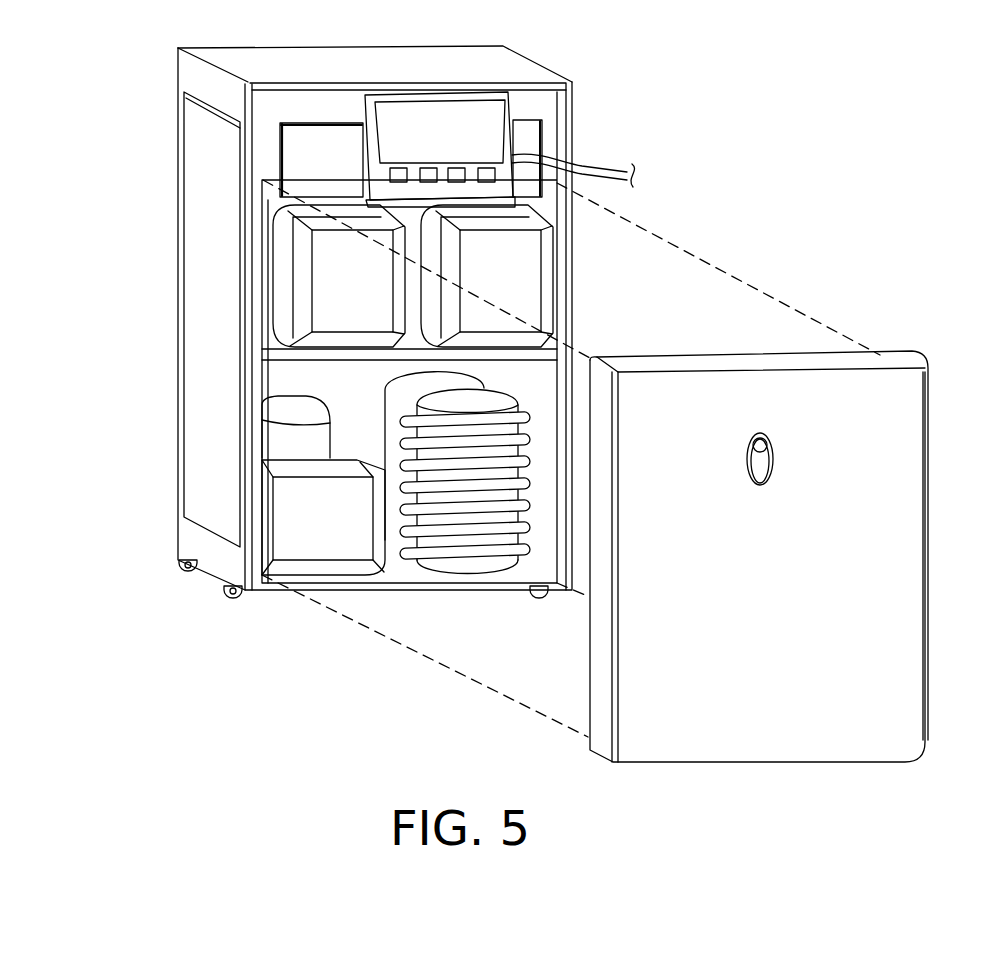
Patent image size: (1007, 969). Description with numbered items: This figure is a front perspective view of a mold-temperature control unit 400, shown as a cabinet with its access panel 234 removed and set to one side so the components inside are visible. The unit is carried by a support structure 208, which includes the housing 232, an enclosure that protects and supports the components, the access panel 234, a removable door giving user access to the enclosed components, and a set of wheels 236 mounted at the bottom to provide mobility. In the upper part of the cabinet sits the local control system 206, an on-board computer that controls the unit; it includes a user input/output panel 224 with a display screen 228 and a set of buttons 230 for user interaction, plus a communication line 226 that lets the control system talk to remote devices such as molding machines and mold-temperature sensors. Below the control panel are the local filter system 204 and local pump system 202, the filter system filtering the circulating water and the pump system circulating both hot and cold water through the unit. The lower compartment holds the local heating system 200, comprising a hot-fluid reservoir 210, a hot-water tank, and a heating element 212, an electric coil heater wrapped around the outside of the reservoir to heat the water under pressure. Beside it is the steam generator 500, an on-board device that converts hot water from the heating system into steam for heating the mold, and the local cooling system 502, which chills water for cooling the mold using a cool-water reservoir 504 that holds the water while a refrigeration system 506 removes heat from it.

The local heating system 200 is at (523, 404).
The local pump system 202 is at (527, 289).
The local filter system 204 is at (374, 289).
The local control system 206 is at (357, 146).
The support structure 208 is at (607, 786).
The hot-fluid reservoir 210 is at (477, 565).
The heating element 212 is at (421, 553).
The user input/output panel 224 is at (379, 182).
The communication line 226 is at (590, 170).
The display screen 228 is at (442, 120).
The set of buttons 230 is at (487, 173).
The housing 232 is at (193, 293).
The access panel 234 is at (890, 642).
The set of wheels 236 is at (232, 598).
The mold-temperature control unit 400 is at (742, 154).
The steam generator 500 is at (374, 421).
The local cooling system 502 is at (262, 502).
The cool-water reservoir 504 is at (297, 413).
The refrigeration system 506 is at (341, 550).